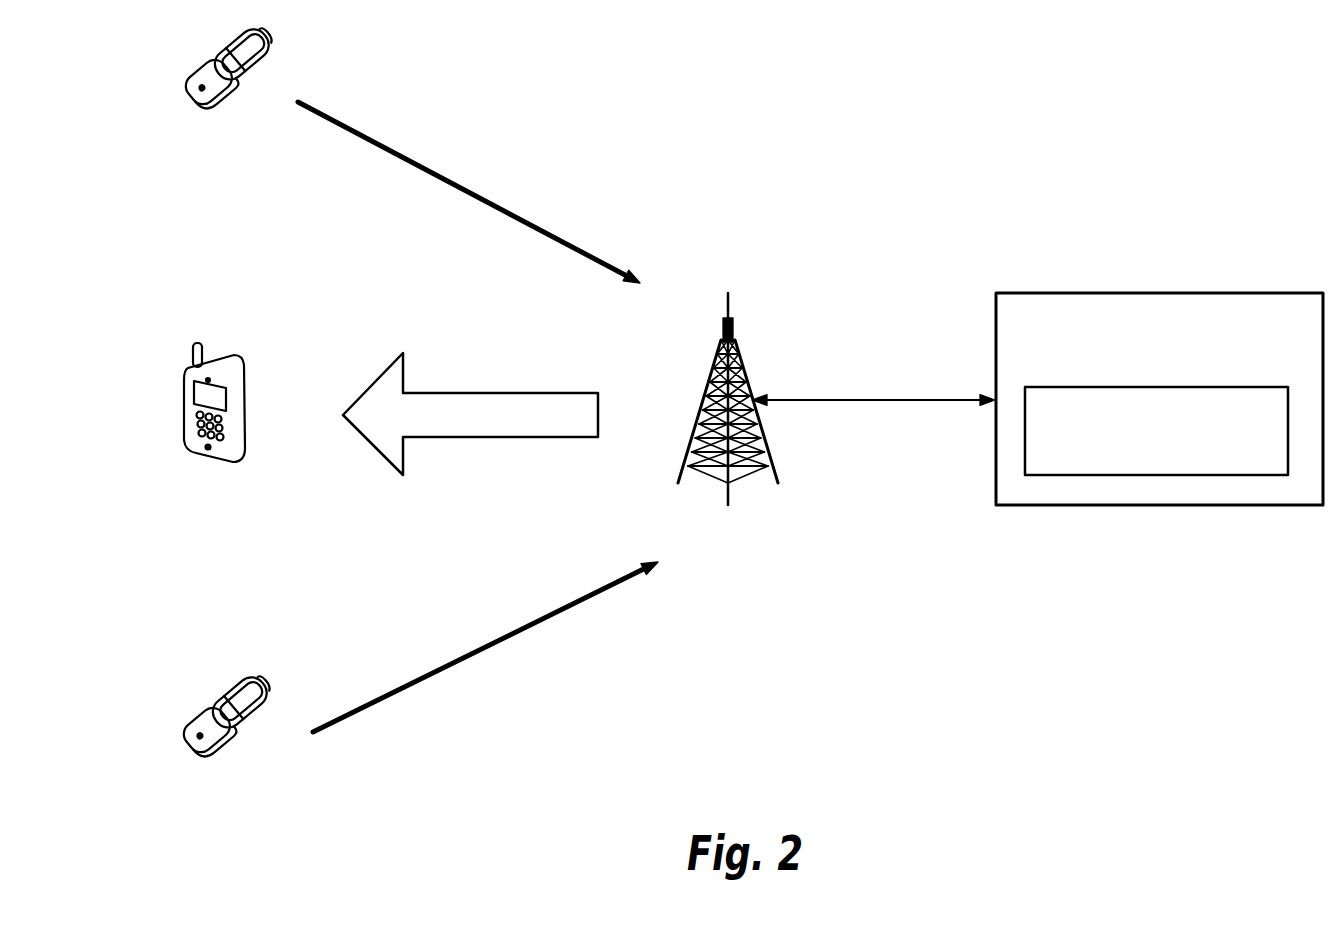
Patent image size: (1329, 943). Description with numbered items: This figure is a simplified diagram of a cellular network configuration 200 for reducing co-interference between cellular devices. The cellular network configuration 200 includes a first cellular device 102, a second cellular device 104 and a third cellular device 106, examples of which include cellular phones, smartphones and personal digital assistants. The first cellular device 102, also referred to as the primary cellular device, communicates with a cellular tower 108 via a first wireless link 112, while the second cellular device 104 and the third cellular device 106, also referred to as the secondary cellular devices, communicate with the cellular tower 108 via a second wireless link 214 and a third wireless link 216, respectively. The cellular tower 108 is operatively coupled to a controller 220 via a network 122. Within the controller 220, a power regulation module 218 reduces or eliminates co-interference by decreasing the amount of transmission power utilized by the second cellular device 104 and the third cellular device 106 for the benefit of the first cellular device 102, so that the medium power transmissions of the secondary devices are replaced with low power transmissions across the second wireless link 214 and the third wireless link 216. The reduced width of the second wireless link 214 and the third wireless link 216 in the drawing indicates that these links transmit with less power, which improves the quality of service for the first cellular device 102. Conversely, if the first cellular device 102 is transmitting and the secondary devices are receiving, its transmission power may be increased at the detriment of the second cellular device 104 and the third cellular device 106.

The cellular network configuration 200 is at (1186, 89).
The first cellular device 102 is at (234, 440).
The second cellular device 104 is at (226, 107).
The third cellular device 106 is at (232, 751).
The cellular tower 108 is at (728, 417).
The first wireless link 112 is at (512, 392).
The network 122 is at (833, 399).
The second wireless link 214 is at (443, 172).
The third wireless link 216 is at (432, 676).
The power regulation module 218 is at (1224, 459).
The controller 220 is at (1252, 352).